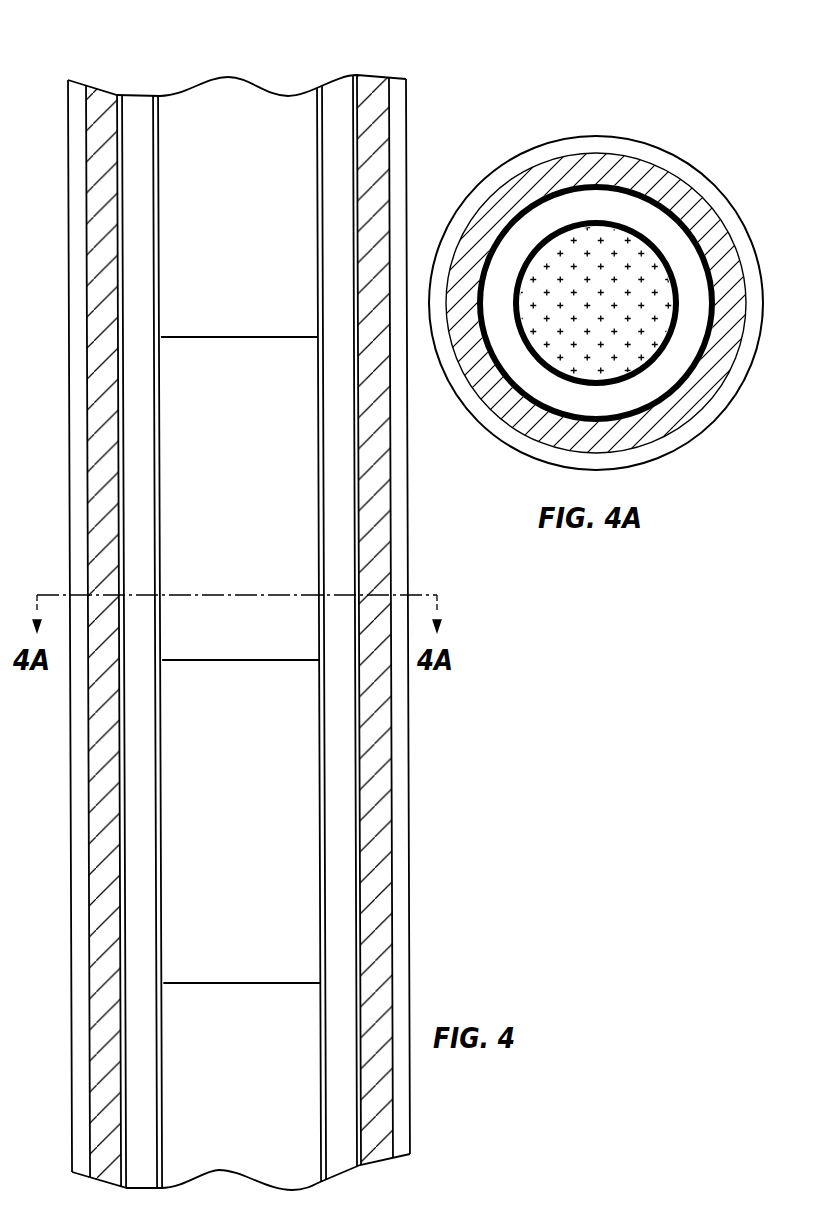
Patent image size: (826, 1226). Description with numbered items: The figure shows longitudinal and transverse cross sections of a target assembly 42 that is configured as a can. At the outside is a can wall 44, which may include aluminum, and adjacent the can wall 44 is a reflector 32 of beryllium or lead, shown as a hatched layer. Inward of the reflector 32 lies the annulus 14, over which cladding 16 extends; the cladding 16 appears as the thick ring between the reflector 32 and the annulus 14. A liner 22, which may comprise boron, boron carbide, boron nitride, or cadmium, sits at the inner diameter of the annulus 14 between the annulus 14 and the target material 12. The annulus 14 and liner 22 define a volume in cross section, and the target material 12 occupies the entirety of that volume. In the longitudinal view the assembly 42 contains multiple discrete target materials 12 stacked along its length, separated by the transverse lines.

In FIG. 4, the target material 12 is at (227, 113).
In FIG. 4A, the target material 12 is at (573, 242).
In FIG. 4, the annulus 14 is at (135, 122).
In FIG. 4A, the annulus 14 is at (622, 212).
In FIG. 4, the cladding 16 is at (118, 94).
In FIG. 4A, the cladding 16 is at (655, 197).
In FIG. 4, the liner 22 is at (156, 97).
In FIG. 4A, the liner 22 is at (590, 217).
In FIG. 4, the reflector 32 is at (102, 97).
In FIG. 4A, the reflector 32 is at (678, 203).
In FIG. 4, the target assembly 42 is at (55, 293).
In FIG. 4A, the target assembly 42 is at (696, 455).
In FIG. 4, the can wall 44 is at (77, 100).
In FIG. 4A, the can wall 44 is at (513, 167).